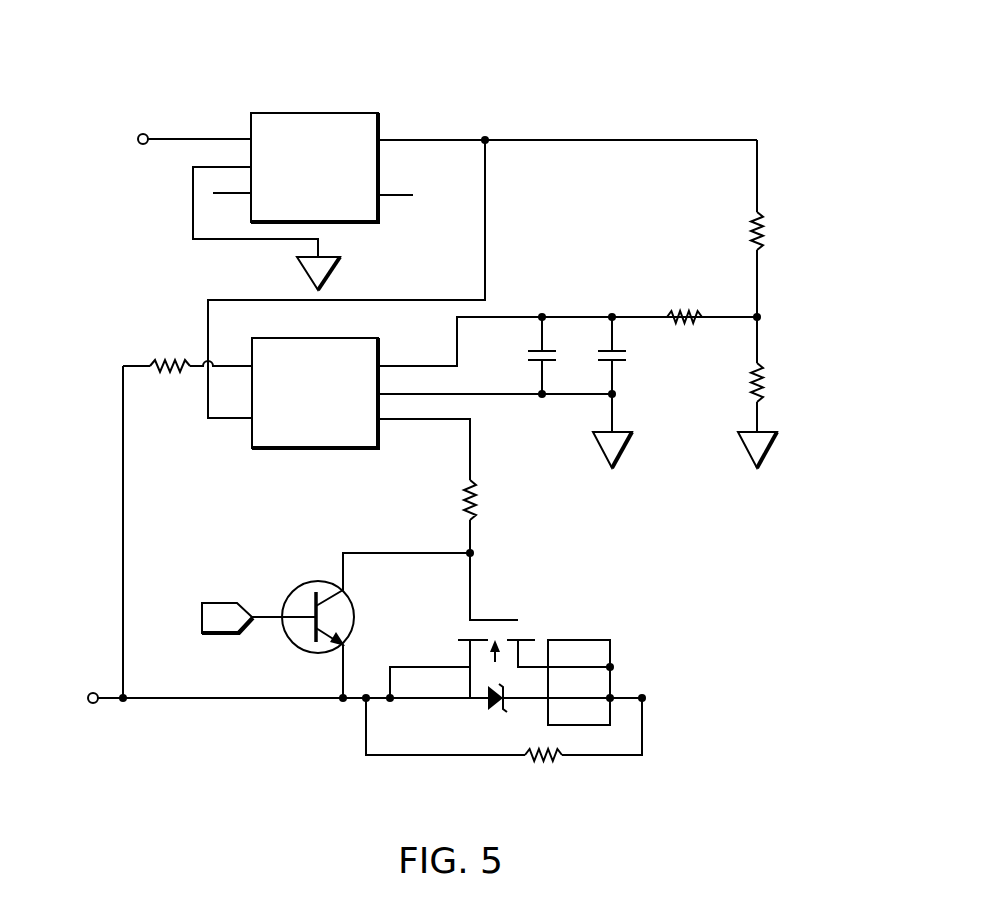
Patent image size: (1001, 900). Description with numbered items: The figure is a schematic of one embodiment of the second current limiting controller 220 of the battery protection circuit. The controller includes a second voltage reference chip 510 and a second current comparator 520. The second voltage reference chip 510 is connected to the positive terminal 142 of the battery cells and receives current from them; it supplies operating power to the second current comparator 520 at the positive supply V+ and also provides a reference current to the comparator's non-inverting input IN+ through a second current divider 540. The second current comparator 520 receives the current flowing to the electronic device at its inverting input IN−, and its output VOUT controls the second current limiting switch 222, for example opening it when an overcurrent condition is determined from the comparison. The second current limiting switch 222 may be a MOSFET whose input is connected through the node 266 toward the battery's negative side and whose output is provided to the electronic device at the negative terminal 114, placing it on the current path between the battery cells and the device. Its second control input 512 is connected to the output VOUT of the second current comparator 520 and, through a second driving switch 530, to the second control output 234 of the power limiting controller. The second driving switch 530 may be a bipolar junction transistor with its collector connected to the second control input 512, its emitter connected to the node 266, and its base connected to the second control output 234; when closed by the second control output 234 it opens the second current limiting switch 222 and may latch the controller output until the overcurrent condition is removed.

The second current limiting controller 220 is at (100, 42).
The positive terminal 142 is at (138, 139).
The second voltage reference chip 510 is at (313, 112).
The second current divider 540 is at (790, 184).
The second current comparator 520 is at (313, 449).
The second driving switch 530 is at (355, 621).
The second control output 234 is at (200, 615).
The node 266 is at (88, 698).
The second control input 512 is at (470, 585).
The second current limiting switch 222 is at (556, 640).
The negative terminal 114 is at (646, 698).